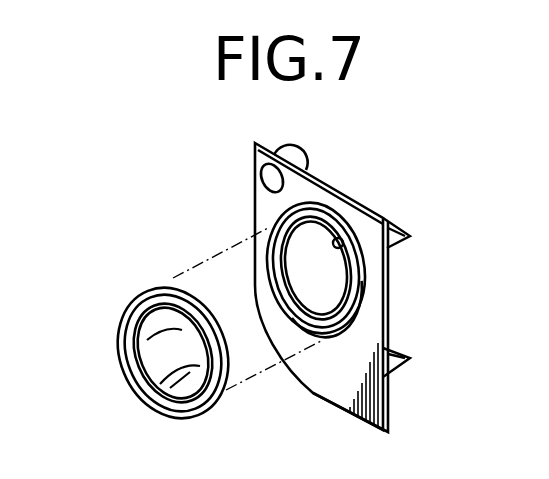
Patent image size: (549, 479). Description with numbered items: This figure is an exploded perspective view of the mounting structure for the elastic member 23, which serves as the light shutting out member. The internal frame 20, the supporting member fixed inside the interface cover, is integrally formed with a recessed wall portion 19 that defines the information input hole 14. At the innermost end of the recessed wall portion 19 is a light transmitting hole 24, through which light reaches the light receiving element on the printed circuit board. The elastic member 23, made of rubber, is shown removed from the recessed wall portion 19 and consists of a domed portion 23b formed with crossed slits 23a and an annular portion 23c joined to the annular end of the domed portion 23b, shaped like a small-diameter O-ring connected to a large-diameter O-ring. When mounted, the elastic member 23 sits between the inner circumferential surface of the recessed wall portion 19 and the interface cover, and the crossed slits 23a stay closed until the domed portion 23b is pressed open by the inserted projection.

The information input hole 14 is at (327, 280).
The recessed wall portion 19 is at (352, 279).
The internal frame 20 is at (335, 205).
The light transmitting hole 24 is at (341, 241).
The elastic member 23 is at (151, 270).
The crossed slits 23a is at (170, 385).
The domed portion 23b is at (165, 357).
The annular portion 23c is at (132, 298).